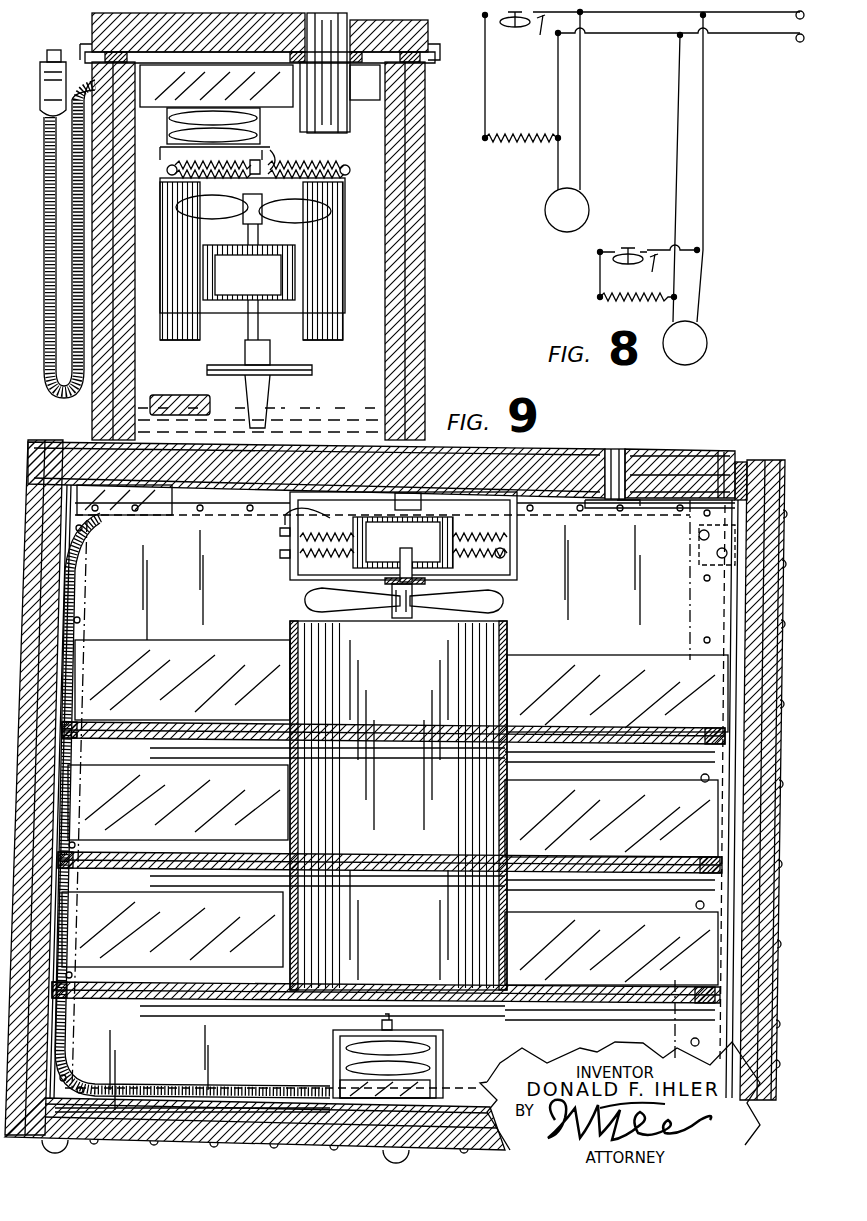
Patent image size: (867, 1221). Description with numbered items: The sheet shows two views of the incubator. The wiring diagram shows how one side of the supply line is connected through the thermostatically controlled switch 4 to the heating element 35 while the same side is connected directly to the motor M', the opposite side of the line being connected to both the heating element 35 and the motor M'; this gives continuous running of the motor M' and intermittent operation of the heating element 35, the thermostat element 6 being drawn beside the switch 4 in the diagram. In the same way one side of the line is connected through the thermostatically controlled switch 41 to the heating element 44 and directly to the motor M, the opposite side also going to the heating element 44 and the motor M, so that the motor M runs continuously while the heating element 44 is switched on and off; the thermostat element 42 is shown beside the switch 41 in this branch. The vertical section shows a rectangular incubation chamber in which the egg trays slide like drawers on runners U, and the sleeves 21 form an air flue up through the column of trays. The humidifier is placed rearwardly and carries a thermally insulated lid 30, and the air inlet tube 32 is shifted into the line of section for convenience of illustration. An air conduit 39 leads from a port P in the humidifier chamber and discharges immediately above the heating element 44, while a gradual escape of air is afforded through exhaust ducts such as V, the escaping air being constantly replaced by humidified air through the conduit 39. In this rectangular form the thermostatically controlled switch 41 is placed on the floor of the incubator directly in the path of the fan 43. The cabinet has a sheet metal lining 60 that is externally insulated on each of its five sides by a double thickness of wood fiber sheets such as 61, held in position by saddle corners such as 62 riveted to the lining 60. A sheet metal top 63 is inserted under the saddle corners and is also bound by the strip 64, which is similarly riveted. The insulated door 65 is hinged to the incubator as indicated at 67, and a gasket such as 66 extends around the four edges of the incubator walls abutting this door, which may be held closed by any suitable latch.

In FIG. 9, the lid 30 is at (92, 28).
In FIG. 9, the air inlet tube 32 is at (333, 127).
In FIG. 9, the saddle corners 62 is at (42, 444).
In FIG. 9, the sheet metal top 63 is at (578, 453).
In FIG. 9, the wood fiber sheets 61 is at (650, 472).
In FIG. 9, the strip 64 is at (730, 455).
In FIG. 9, the gasket 66 is at (741, 465).
In FIG. 9, the insulated door 65 is at (758, 460).
In FIG. 9, the hinge 67 is at (702, 568).
In FIG. 9, the sheet metal lining 60 is at (578, 500).
In FIG. 9, the air conduit 39 is at (398, 536).
In FIG. 9, the fan 43 is at (505, 603).
In FIG. 9, the sleeves 21 is at (508, 812).
In FIG. 9, the thermostatically controlled switch 41 is at (435, 1085).
In FIG. 8, the thermostatically controlled switch 41 is at (652, 272).
In FIG. 8, the thermostat switch 6 is at (513, 32).
In FIG. 8, the thermostatically controlled switch 4 is at (541, 34).
In FIG. 8, the heating element 35 is at (500, 150).
In FIG. 8, the switch 42 is at (628, 250).
In FIG. 8, the heating element 44 is at (600, 297).
In FIG. 9, the motor M is at (403, 549).
In FIG. 8, the motor M is at (685, 343).
In FIG. 9, the motor M' is at (249, 272).
In FIG. 8, the motor M' is at (567, 210).
In FIG. 9, the port P is at (160, 148).
In FIG. 9, the runners U is at (152, 735).
In FIG. 9, the exhaust ducts V is at (622, 505).